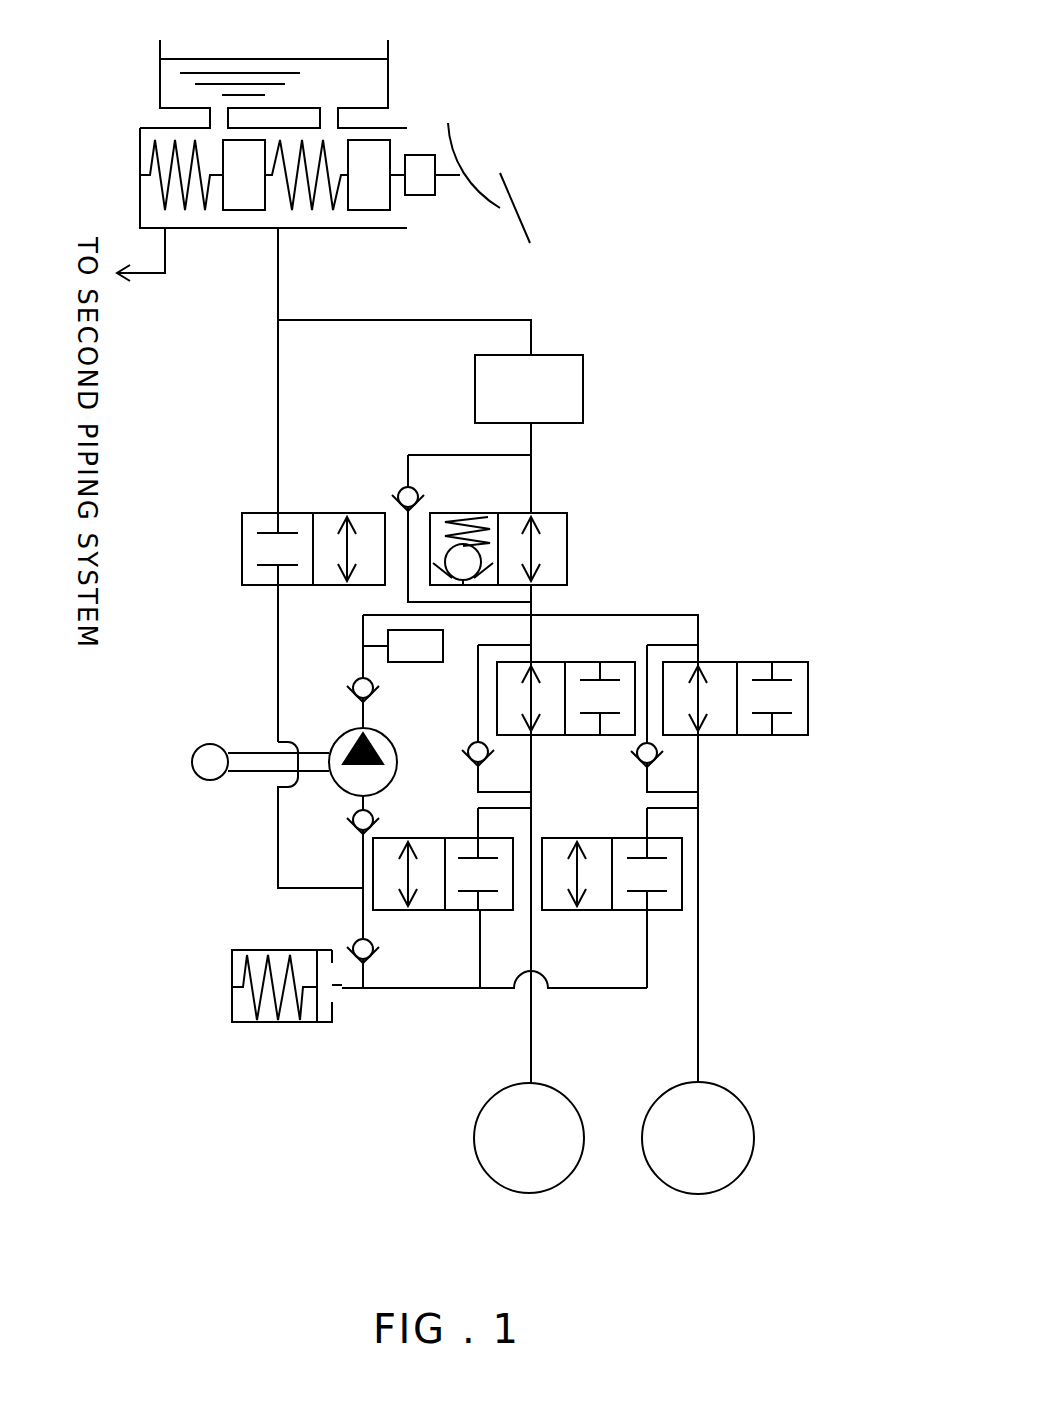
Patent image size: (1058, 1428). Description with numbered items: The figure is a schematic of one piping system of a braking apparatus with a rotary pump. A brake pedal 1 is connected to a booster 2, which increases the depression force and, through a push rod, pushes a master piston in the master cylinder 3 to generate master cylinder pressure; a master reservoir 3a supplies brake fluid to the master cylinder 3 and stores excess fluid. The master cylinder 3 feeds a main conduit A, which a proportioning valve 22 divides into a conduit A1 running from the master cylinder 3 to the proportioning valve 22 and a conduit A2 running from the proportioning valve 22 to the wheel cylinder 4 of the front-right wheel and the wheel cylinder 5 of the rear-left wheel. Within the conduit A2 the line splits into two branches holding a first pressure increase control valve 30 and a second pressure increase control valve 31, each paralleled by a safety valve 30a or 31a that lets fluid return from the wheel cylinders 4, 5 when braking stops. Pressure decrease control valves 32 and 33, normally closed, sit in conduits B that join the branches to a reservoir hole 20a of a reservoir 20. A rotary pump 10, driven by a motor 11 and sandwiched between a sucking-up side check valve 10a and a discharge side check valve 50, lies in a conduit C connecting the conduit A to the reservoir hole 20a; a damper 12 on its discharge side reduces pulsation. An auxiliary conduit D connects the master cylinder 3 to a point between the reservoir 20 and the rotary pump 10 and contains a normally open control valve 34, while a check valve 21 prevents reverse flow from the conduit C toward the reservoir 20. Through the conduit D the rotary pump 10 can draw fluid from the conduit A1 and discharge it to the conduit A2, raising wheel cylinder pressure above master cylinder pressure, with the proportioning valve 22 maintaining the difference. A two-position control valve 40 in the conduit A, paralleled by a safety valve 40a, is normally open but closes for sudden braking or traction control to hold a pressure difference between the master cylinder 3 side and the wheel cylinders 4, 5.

The brake pedal 1 is at (505, 184).
The booster 2 is at (423, 195).
The master cylinder 3 is at (138, 152).
The master reservoir 3a is at (205, 66).
The wheel cylinder 4 is at (480, 1165).
The wheel cylinder 5 is at (648, 1170).
The rotary pump 10 is at (340, 742).
The check valve 10a is at (350, 826).
The motor 11 is at (193, 754).
The damper 12 is at (425, 664).
The reservoir 20 is at (232, 1005).
The reservoir hole 20a is at (332, 987).
The check valve 21 is at (393, 990).
The proportioning valve 22 is at (583, 385).
The first pressure increase control valve 30 is at (608, 662).
The safety valve 30a is at (470, 763).
The second pressure increase control valve 31 is at (765, 735).
The safety valve 31a is at (637, 760).
The pressure decrease control valve 32 is at (477, 838).
The pressure decrease control valve 33 is at (685, 868).
The control valve 34 is at (242, 550).
The control valve 40 is at (567, 540).
The safety valve 40a is at (405, 487).
The check valve 50 is at (355, 698).
The conduit A is at (270, 295).
The conduit A1 is at (507, 318).
The conduit A2 is at (698, 627).
The conduit B is at (482, 952).
The conduit C is at (363, 618).
The auxiliary conduit D is at (276, 443).